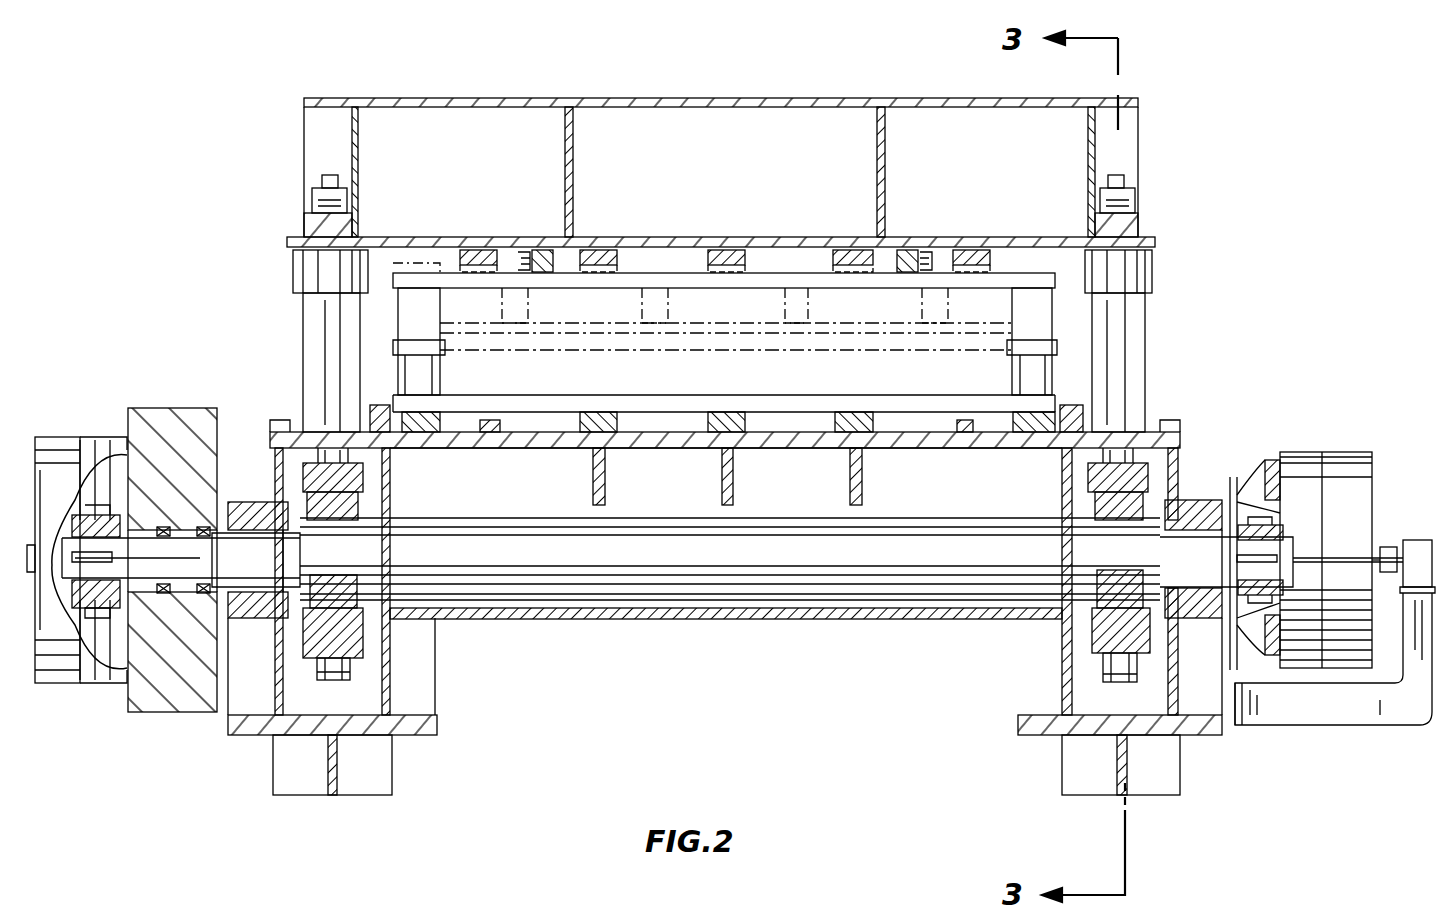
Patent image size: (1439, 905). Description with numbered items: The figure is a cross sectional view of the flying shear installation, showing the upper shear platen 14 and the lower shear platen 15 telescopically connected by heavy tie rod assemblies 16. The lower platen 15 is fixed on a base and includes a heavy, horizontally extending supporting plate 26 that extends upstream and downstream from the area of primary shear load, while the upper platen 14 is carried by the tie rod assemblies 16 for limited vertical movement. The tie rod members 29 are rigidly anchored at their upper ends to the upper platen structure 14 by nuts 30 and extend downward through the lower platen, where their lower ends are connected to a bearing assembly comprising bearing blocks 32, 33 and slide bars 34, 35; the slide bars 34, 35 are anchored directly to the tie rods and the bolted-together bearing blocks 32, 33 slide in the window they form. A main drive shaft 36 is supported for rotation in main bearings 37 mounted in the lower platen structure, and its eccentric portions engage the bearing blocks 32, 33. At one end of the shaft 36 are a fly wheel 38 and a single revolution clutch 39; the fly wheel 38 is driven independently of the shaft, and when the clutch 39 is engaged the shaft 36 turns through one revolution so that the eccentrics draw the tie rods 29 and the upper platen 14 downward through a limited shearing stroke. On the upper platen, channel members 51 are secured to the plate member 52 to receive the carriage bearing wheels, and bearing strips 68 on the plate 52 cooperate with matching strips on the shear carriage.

The upper shear platen 14 is at (738, 184).
The lower shear platen 15 is at (666, 492).
The tie rod assemblies 16 is at (300, 362).
The supporting plate 26 is at (795, 450).
The tie rod members 29 is at (282, 432).
The nuts 30 is at (1130, 190).
The bearing block 32 is at (365, 578).
The bearing block 33 is at (345, 510).
The slide bar 34 is at (355, 485).
The slide bar 35 is at (352, 648).
The main drive shaft 36 is at (683, 580).
The main bearings 37 is at (262, 502).
The fly wheel 38 is at (183, 698).
The clutch 39 is at (67, 680).
The channel members 51 is at (545, 262).
The plate member 52 is at (662, 245).
The bearing strips 68 is at (730, 248).